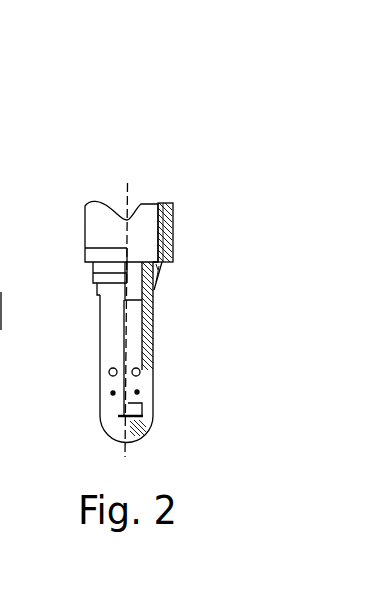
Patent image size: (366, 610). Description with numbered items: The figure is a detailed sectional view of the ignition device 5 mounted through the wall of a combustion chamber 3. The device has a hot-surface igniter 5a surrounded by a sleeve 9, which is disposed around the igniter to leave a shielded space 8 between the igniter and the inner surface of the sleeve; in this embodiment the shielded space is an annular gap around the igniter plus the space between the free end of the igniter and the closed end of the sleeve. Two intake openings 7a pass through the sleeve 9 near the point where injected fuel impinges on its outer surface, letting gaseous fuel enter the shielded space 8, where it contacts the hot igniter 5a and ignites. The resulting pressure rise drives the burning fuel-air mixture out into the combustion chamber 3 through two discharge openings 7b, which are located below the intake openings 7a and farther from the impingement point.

The screw 5 is at (101, 183).
The bore 5a is at (128, 335).
The sleeve 9 is at (152, 356).
The ring 8 is at (128, 404).
The holes 7a is at (132, 369).
The holes 7b is at (135, 394).
The housing 3 is at (0, 334).